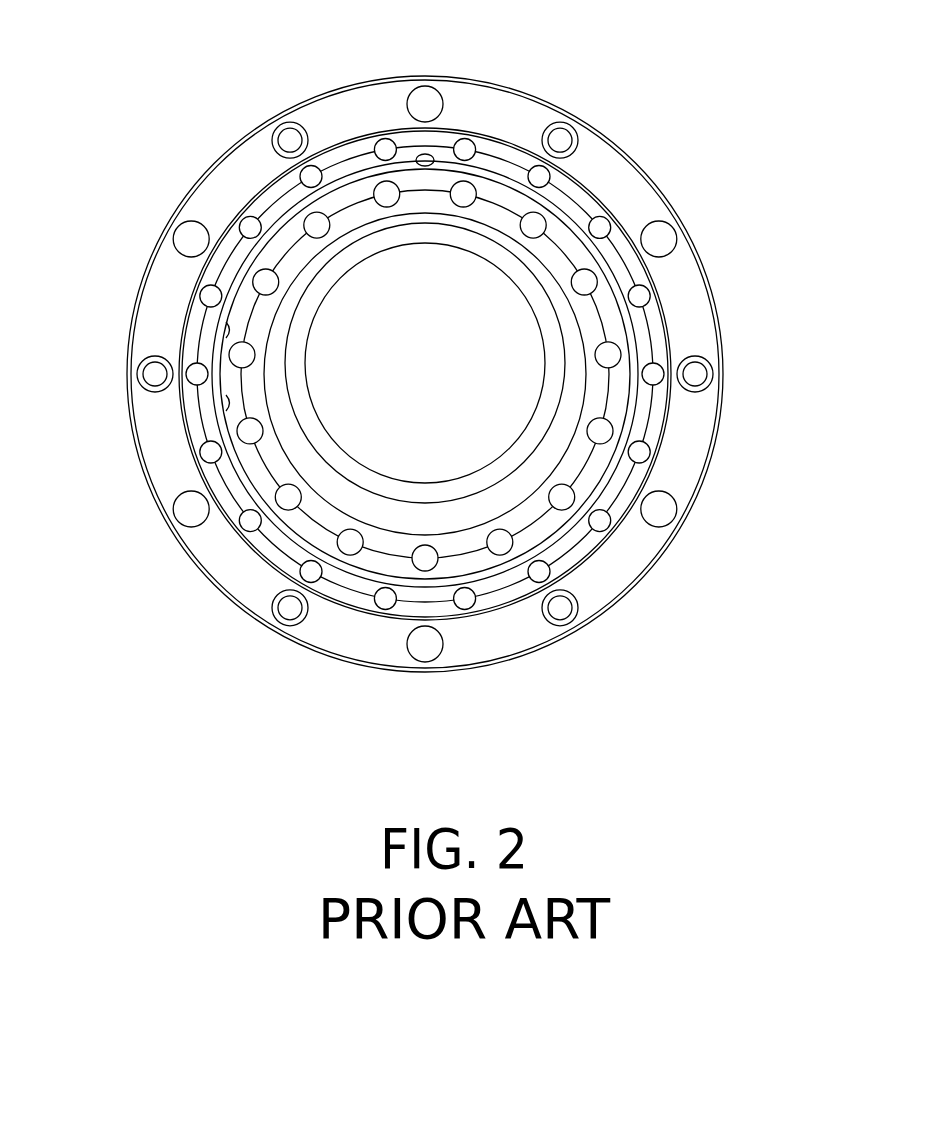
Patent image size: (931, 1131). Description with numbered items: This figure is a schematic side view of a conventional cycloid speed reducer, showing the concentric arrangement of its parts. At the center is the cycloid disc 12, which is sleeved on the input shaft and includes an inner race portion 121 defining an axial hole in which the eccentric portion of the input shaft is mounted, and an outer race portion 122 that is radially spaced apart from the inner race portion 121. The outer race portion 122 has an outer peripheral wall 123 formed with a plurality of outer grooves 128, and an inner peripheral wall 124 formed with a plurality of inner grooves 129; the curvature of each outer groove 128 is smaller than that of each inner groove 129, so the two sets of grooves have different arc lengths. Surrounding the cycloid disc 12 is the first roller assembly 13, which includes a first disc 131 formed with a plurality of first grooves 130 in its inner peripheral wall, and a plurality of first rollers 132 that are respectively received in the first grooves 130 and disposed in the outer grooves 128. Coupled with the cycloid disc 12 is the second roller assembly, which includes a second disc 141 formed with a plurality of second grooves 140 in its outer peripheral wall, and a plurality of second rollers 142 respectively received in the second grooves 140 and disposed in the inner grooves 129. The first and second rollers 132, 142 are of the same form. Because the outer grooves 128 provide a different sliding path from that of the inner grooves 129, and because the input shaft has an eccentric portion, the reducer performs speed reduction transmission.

The cycloid disc 12 is at (439, 139).
The first roller assembly 13 is at (616, 131).
The inner race portion 121 is at (460, 490).
The outer race portion 122 is at (509, 154).
The outer peripheral wall 123 is at (205, 273).
The inner peripheral wall 124 is at (240, 508).
The outer grooves 128 is at (293, 168).
The inner grooves 129 is at (228, 337).
The first grooves 130 is at (648, 378).
The first disc 131 is at (633, 193).
The first rollers 132 is at (312, 172).
The second grooves 140 is at (426, 547).
The second disc 141 is at (570, 467).
The second rollers 142 is at (262, 478).